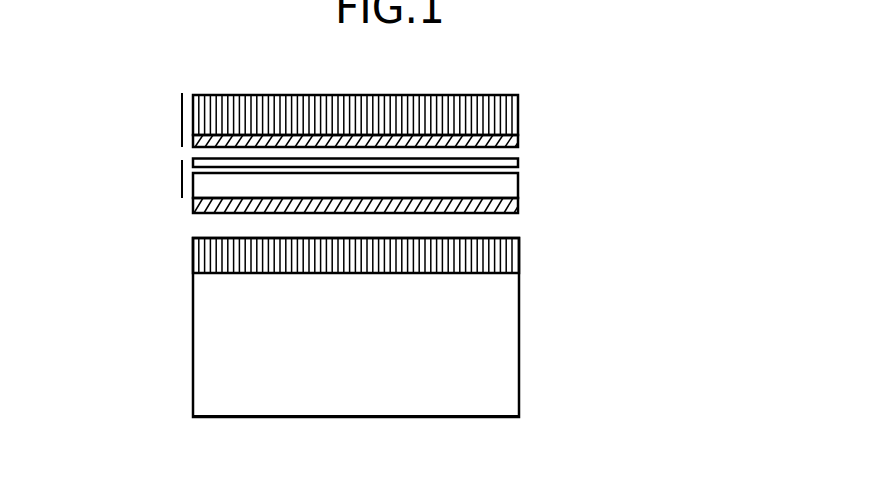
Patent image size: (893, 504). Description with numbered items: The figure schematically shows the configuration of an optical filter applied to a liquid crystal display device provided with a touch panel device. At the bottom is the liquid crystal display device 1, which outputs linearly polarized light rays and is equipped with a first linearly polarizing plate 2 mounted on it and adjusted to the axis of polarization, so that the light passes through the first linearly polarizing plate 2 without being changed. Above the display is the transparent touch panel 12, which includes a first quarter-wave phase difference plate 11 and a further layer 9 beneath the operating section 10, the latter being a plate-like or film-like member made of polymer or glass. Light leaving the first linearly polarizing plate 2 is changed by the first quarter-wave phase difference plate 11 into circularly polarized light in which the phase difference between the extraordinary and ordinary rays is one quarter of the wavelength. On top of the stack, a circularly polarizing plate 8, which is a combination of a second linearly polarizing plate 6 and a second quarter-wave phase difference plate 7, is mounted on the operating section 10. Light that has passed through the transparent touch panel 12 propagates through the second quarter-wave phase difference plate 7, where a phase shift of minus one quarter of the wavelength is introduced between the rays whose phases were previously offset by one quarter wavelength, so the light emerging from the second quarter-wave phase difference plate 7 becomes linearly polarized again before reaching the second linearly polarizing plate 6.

The liquid crystal display device 1 is at (486, 327).
The first linearly polarizing plate 2 is at (519, 266).
The second linearly polarizing plate 6 is at (517, 105).
The second quarter-wave phase difference plate 7 is at (517, 140).
The circularly polarizing plate 8 is at (407, 95).
The touch panel substrate 9 is at (518, 190).
The operating section 10 is at (518, 165).
The first quarter-wave phase difference plate 11 is at (518, 211).
The transparent touch panel 12 is at (394, 223).